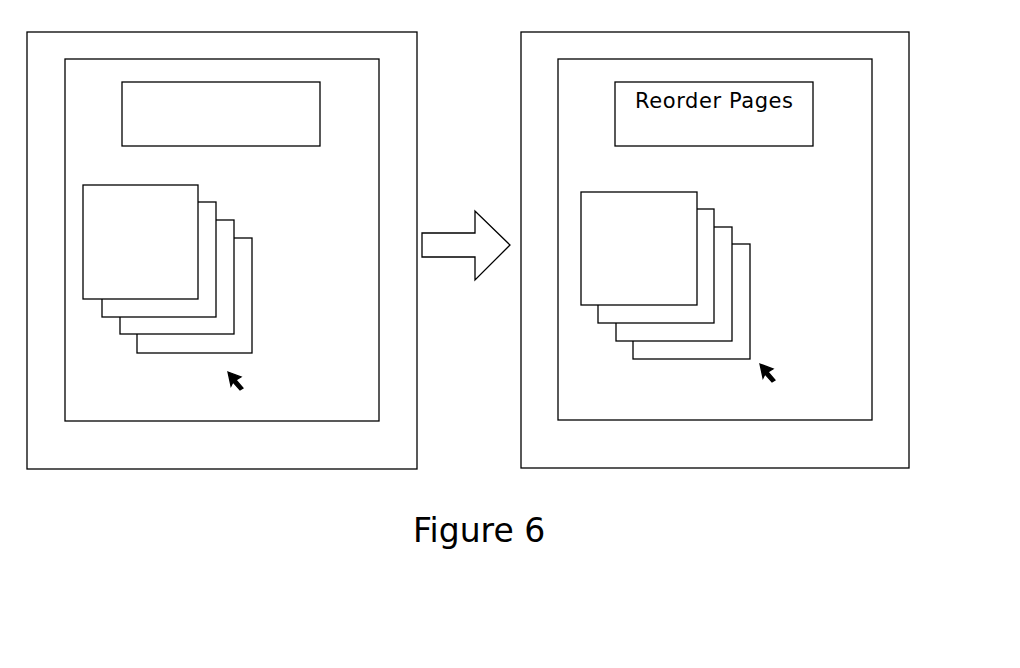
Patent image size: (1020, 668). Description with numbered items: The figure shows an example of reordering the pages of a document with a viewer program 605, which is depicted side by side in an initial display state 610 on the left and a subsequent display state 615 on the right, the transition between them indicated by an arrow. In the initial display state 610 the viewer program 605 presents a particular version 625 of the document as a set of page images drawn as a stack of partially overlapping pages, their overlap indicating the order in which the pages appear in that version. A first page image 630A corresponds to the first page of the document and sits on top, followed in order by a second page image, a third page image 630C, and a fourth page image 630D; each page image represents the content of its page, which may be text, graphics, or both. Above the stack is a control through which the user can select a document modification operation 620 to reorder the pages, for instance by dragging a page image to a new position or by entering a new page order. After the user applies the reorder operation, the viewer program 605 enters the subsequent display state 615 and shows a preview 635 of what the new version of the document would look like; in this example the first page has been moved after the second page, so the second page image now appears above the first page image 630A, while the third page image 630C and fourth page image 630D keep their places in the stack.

The viewer program 605 is at (243, 456).
The initial display state 610 is at (222, 273).
The subsequent display state 615 is at (715, 265).
The document modification operation 620 is at (221, 114).
The particular version of a document 625 is at (268, 385).
The first page image 630A is at (440, 242).
The third page image 630C is at (467, 271).
The fourth page image 630D is at (486, 299).
The preview 635 is at (800, 377).